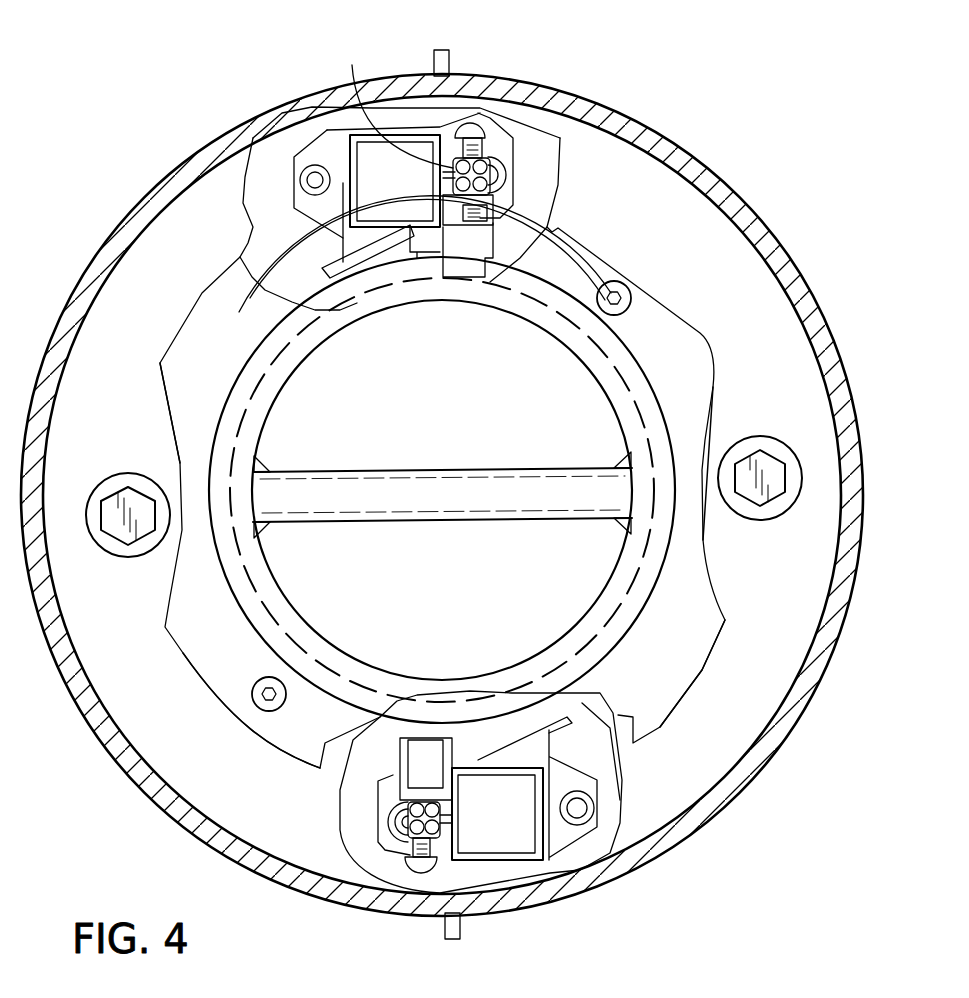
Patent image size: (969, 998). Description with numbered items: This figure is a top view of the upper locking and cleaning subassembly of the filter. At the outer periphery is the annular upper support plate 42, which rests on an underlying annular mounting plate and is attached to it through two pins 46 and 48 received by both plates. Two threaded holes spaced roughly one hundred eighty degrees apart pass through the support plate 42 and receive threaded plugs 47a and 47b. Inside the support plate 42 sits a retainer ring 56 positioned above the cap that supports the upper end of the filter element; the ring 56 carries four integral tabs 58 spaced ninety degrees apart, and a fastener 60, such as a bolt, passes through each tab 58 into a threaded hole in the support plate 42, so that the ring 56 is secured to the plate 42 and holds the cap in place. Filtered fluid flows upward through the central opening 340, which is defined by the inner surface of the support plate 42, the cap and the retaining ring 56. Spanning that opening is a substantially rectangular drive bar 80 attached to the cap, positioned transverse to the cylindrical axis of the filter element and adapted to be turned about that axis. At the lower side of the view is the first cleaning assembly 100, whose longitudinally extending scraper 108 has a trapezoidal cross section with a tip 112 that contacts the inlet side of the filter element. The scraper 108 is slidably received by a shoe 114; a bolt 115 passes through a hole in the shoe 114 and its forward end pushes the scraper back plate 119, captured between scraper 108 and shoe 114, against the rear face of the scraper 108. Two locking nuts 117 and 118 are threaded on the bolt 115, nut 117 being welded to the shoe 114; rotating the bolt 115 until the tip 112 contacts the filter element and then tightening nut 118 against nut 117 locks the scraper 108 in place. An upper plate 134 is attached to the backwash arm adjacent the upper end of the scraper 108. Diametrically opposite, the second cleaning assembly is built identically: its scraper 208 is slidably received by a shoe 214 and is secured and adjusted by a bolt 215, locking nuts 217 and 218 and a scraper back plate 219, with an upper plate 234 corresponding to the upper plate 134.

The upper support plate 42 is at (828, 655).
The pin 46 is at (433, 52).
The pin 48 is at (458, 927).
The threaded plug 47a is at (133, 490).
The threaded plug 47b is at (748, 452).
The retainer ring 56 is at (670, 297).
The integral tab 58 is at (202, 293).
The fastener 60 is at (620, 287).
The drive bar 80 is at (488, 470).
The cleaning assembly 100 is at (595, 868).
The scraper 108 is at (430, 738).
The tip 112 is at (442, 738).
The shoe 114 is at (408, 738).
The bolt 115 is at (412, 852).
The locking nut 117 is at (380, 808).
The locking nut 118 is at (393, 828).
The scraper back plate 119 is at (455, 740).
The upper plate 134 is at (625, 707).
The scraper 208 is at (443, 278).
The shoe 214 is at (513, 205).
The bolt 215 is at (481, 124).
The locking nut 217 is at (416, 252).
The locking nut 218 is at (379, 113).
The scraper back plate 219 is at (500, 220).
The upper plate 234 is at (445, 190).
The opening 340 is at (315, 425).